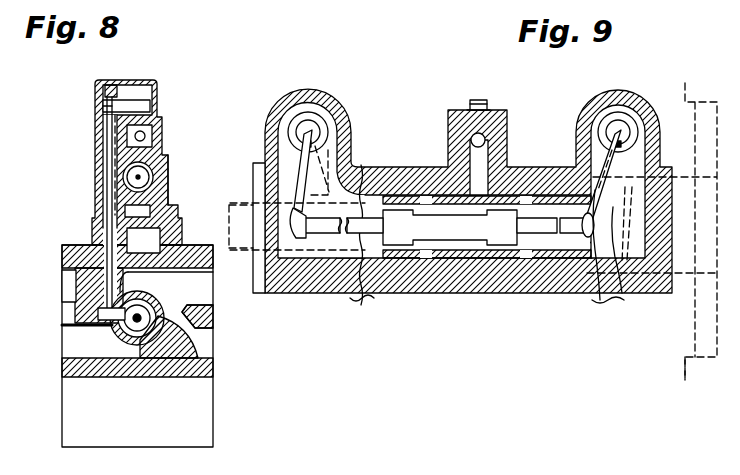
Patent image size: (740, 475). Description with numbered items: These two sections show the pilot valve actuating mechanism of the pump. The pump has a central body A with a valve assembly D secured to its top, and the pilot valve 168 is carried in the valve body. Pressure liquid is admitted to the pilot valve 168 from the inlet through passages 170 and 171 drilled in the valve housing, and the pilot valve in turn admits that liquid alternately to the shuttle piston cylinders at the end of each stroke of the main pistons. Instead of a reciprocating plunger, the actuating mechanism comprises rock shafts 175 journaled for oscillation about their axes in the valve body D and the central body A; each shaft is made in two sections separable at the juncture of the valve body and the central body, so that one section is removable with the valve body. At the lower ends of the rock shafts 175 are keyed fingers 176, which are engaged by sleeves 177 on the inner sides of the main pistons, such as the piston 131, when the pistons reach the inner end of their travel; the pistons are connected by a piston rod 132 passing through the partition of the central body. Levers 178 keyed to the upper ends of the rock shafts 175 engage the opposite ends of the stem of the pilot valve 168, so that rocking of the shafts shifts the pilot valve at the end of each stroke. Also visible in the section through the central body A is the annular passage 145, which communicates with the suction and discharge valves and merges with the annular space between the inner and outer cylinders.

In FIG. 8, the pilot valve 168 is at (167, 90).
In FIG. 9, the pilot valve 168 is at (490, 302).
In FIG. 8, the levers 178 is at (125, 103).
In FIG. 9, the levers 178 is at (292, 175).
In FIG. 8, the rock shafts 175 is at (108, 160).
In FIG. 9, the rock shafts 175 is at (312, 126).
In FIG. 8, the fingers 176 is at (110, 322).
In FIG. 9, the fingers 176 is at (332, 157).
In FIG. 8, the annular passage 145 is at (172, 316).
In FIG. 9, the passage 170 is at (462, 135).
In FIG. 9, the passage 171 is at (485, 153).
In FIG. 9, the piston rod 132 is at (245, 249).
In FIG. 9, the sleeves 177 is at (687, 292).
In FIG. 9, the piston 131 is at (693, 346).
In FIG. 8, the valve assembly D is at (172, 150).
In FIG. 8, the central body A is at (190, 236).